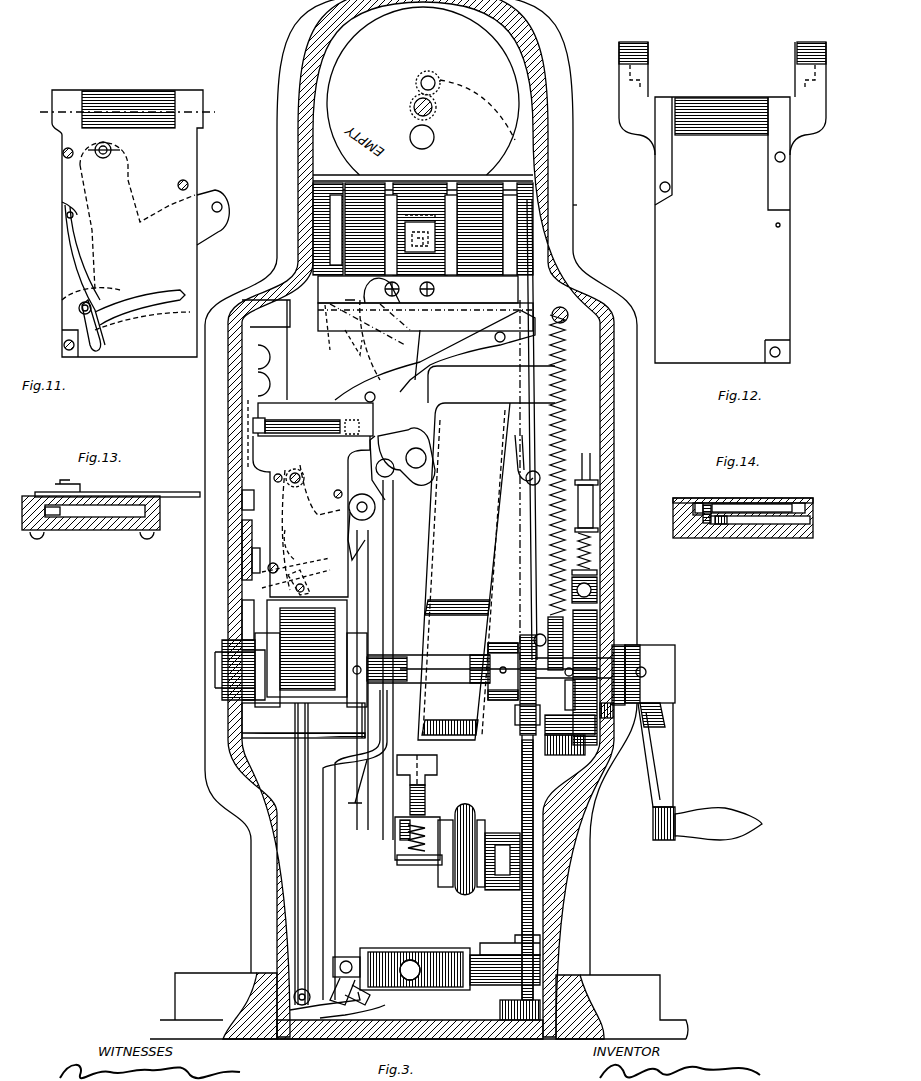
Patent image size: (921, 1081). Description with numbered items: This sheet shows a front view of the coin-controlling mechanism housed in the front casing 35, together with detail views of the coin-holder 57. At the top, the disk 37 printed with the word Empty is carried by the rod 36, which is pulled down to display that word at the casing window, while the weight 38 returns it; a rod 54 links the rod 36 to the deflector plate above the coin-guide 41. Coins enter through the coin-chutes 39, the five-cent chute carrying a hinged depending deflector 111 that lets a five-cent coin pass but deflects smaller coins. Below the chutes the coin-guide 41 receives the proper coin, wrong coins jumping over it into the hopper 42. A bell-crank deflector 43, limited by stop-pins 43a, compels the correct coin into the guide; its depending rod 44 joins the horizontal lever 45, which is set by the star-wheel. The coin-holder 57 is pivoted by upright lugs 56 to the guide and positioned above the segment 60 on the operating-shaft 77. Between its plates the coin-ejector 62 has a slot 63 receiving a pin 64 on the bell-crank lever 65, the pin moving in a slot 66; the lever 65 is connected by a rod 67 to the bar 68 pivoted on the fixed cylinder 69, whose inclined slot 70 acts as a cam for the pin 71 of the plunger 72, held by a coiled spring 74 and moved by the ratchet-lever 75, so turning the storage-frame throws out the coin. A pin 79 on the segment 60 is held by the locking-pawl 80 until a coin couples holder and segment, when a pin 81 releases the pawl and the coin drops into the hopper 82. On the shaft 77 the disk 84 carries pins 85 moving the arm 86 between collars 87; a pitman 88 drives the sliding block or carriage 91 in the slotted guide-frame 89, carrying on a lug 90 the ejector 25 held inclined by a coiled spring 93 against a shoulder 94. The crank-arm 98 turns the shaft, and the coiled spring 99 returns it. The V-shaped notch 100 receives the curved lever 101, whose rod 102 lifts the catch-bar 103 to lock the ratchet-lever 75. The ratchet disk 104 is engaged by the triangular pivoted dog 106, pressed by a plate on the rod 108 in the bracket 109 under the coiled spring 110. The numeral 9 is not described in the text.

In FIG. 3, the dashed lines 9 is at (294, 573).
In FIG. 3, the ejector 25 is at (438, 765).
In FIG. 3, the front casing 35 is at (575, 218).
In FIG. 3, the rod 36 is at (488, 92).
In FIG. 3, the disk 37 is at (423, 91).
In FIG. 3, the weight 38 is at (434, 135).
In FIG. 3, the coin-chutes 39 is at (440, 180).
In FIG. 3, the coin-guide 41 is at (426, 352).
In FIG. 3, the hopper 42 is at (436, 508).
In FIG. 3, the deflector 43 is at (372, 329).
In FIG. 3, the stop-pins 43a is at (352, 352).
In FIG. 3, the depending rod 44 is at (375, 872).
In FIG. 3, the lever 45 is at (348, 1020).
In FIG. 3, the rod 54 is at (528, 485).
In FIG. 3, the upright lugs 56 is at (390, 447).
In FIG. 12, the upright lugs 56 is at (722, 98).
In FIG. 3, the coin-holder 57 is at (309, 498).
In FIG. 11, the coin-holder 57 is at (127, 223).
In FIG. 12, the coin-holder 57 is at (722, 230).
In FIG. 13, the coin-holder 57 is at (108, 533).
In FIG. 14, the coin-holder 57 is at (743, 529).
In FIG. 3, the segment 60 is at (311, 653).
In FIG. 3, the coin-ejector 62 is at (295, 548).
In FIG. 11, the coin-ejector 62 is at (95, 305).
In FIG. 13, the coin-ejector 62 is at (56, 517).
In FIG. 14, the coin-ejector 62 is at (700, 504).
In FIG. 3, the slot 63 is at (308, 588).
In FIG. 11, the slot 63 is at (105, 343).
In FIG. 14, the slot 63 is at (725, 526).
In FIG. 3, the pin 64 is at (273, 562).
In FIG. 11, the pin 64 is at (72, 306).
In FIG. 14, the pin 64 is at (707, 524).
In FIG. 3, the bell-crank lever 65 is at (318, 512).
In FIG. 11, the bell-crank lever 65 is at (140, 222).
In FIG. 13, the bell-crank lever 65 is at (140, 492).
In FIG. 14, the bell-crank lever 65 is at (795, 500).
In FIG. 11, the slot 66 is at (170, 290).
In FIG. 14, the slot 66 is at (765, 505).
In FIG. 3, the rod 67 is at (372, 602).
In FIG. 3, the bar 68 is at (305, 1010).
In FIG. 3, the fixed cylinder 69 is at (408, 950).
In FIG. 3, the inclined slot 70 is at (348, 960).
In FIG. 3, the pin 71 is at (343, 957).
In FIG. 3, the plunger 72 is at (372, 952).
In FIG. 3, the coiled spring 74 is at (440, 955).
In FIG. 3, the ratchet-lever 75 is at (498, 943).
In FIG. 3, the operating-shaft 77 is at (462, 700).
In FIG. 3, the pin 79 is at (230, 620).
In FIG. 3, the locking-pawl 80 is at (228, 535).
In FIG. 3, the pin 81 is at (242, 572).
In FIG. 3, the hopper 82 is at (303, 720).
In FIG. 3, the disk 84 is at (548, 630).
In FIG. 3, the screws or pins 85 is at (515, 724).
In FIG. 3, the arm 86 is at (520, 771).
In FIG. 3, the collars 87 is at (503, 662).
In FIG. 3, the pitman 88 is at (512, 890).
In FIG. 3, the slotted guide-frame 89 is at (460, 812).
In FIG. 3, the lug 90 is at (400, 806).
In FIG. 3, the sliding block or carriage 91 is at (438, 878).
In FIG. 3, the coiled spring 93 is at (405, 842).
In FIG. 3, the shoulder 94 is at (408, 867).
In FIG. 3, the crank-arm 98 is at (673, 765).
In FIG. 3, the coiled spring 99 is at (568, 461).
In FIG. 3, the V-shaped notch 100 is at (600, 637).
In FIG. 3, the curved lever 101 is at (560, 765).
In FIG. 3, the rod 102 is at (580, 845).
In FIG. 3, the catch-bar 103 is at (515, 1020).
In FIG. 3, the disk 104 is at (620, 735).
In FIG. 3, the triangular pivoted dog 106 is at (597, 620).
In FIG. 3, the rod 108 is at (595, 515).
In FIG. 3, the bracket 109 is at (600, 490).
In FIG. 3, the coiled spring 110 is at (598, 558).
In FIG. 3, the depending deflector 111 is at (417, 255).